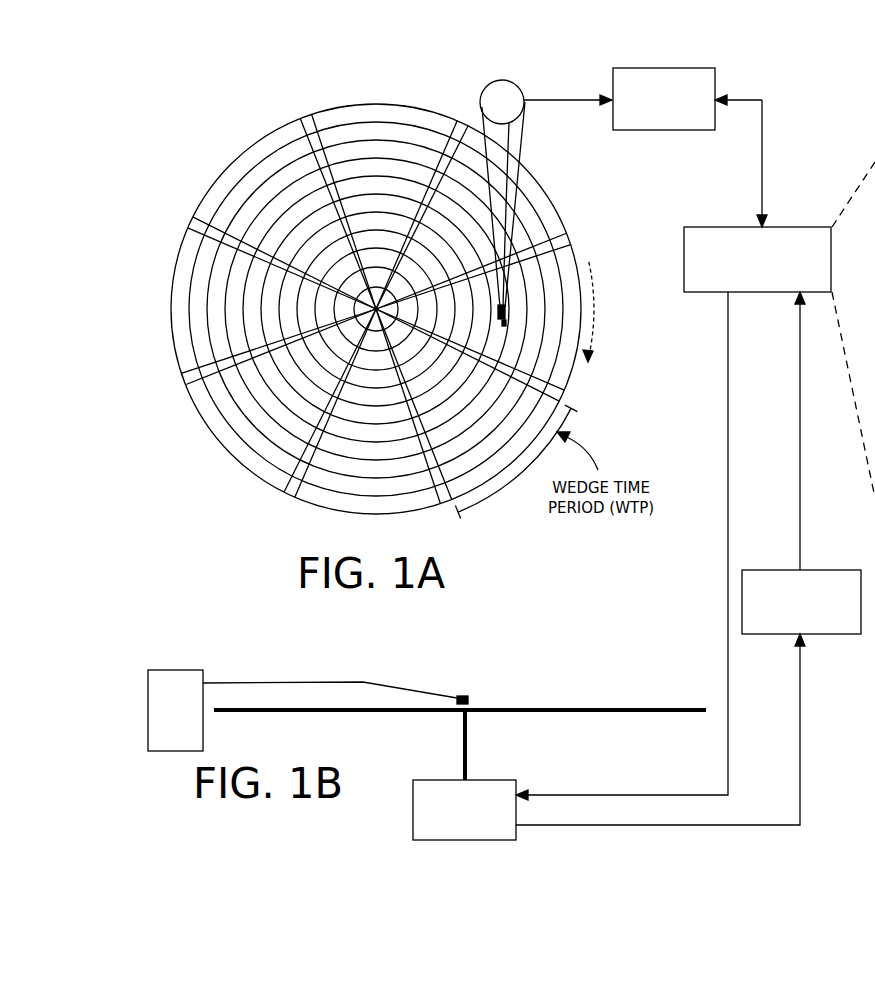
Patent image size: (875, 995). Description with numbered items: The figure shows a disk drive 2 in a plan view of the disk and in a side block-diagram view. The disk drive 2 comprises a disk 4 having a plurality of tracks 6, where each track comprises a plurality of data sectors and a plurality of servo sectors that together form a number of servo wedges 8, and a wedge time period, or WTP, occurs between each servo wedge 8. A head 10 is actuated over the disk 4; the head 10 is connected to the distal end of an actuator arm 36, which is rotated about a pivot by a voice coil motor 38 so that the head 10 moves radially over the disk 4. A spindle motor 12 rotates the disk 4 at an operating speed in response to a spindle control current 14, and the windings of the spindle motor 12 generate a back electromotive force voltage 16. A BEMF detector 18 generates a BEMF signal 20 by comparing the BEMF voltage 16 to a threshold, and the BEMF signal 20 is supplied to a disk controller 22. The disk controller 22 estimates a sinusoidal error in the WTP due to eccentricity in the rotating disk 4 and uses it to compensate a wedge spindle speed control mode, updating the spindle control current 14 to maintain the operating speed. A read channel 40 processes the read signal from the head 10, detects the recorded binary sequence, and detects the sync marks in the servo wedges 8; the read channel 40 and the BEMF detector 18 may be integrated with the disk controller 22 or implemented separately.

In FIG. 1A, the disk drive 2 is at (208, 109).
In FIG. 1B, the disk drive 2 is at (602, 660).
In FIG. 1A, the disk 4 is at (214, 164).
In FIG. 1B, the disk 4 is at (530, 708).
In FIG. 1A, the tracks 6 is at (375, 127).
In FIG. 1A, the servo wedges 8 is at (302, 117).
In FIG. 1A, the head 10 is at (506, 324).
In FIG. 1B, the head 10 is at (462, 696).
In FIG. 1B, the spindle motor 12 is at (413, 822).
In FIG. 1A, the spindle control current 14 is at (727, 383).
In FIG. 1B, the BEMF voltage 16 is at (803, 718).
In FIG. 1B, the BEMF detector 18 is at (835, 570).
In FIG. 1A, the BEMF signal 20 is at (800, 440).
In FIG. 1A, the disk controller 22 is at (684, 257).
In FIG. 1A, the actuator arm 36 is at (526, 140).
In FIG. 1B, the actuator arm 36 is at (247, 682).
In FIG. 1A, the voice coil motor 38 is at (502, 80).
In FIG. 1B, the voice coil motor 38 is at (175, 670).
In FIG. 1A, the read channel 40 is at (660, 133).